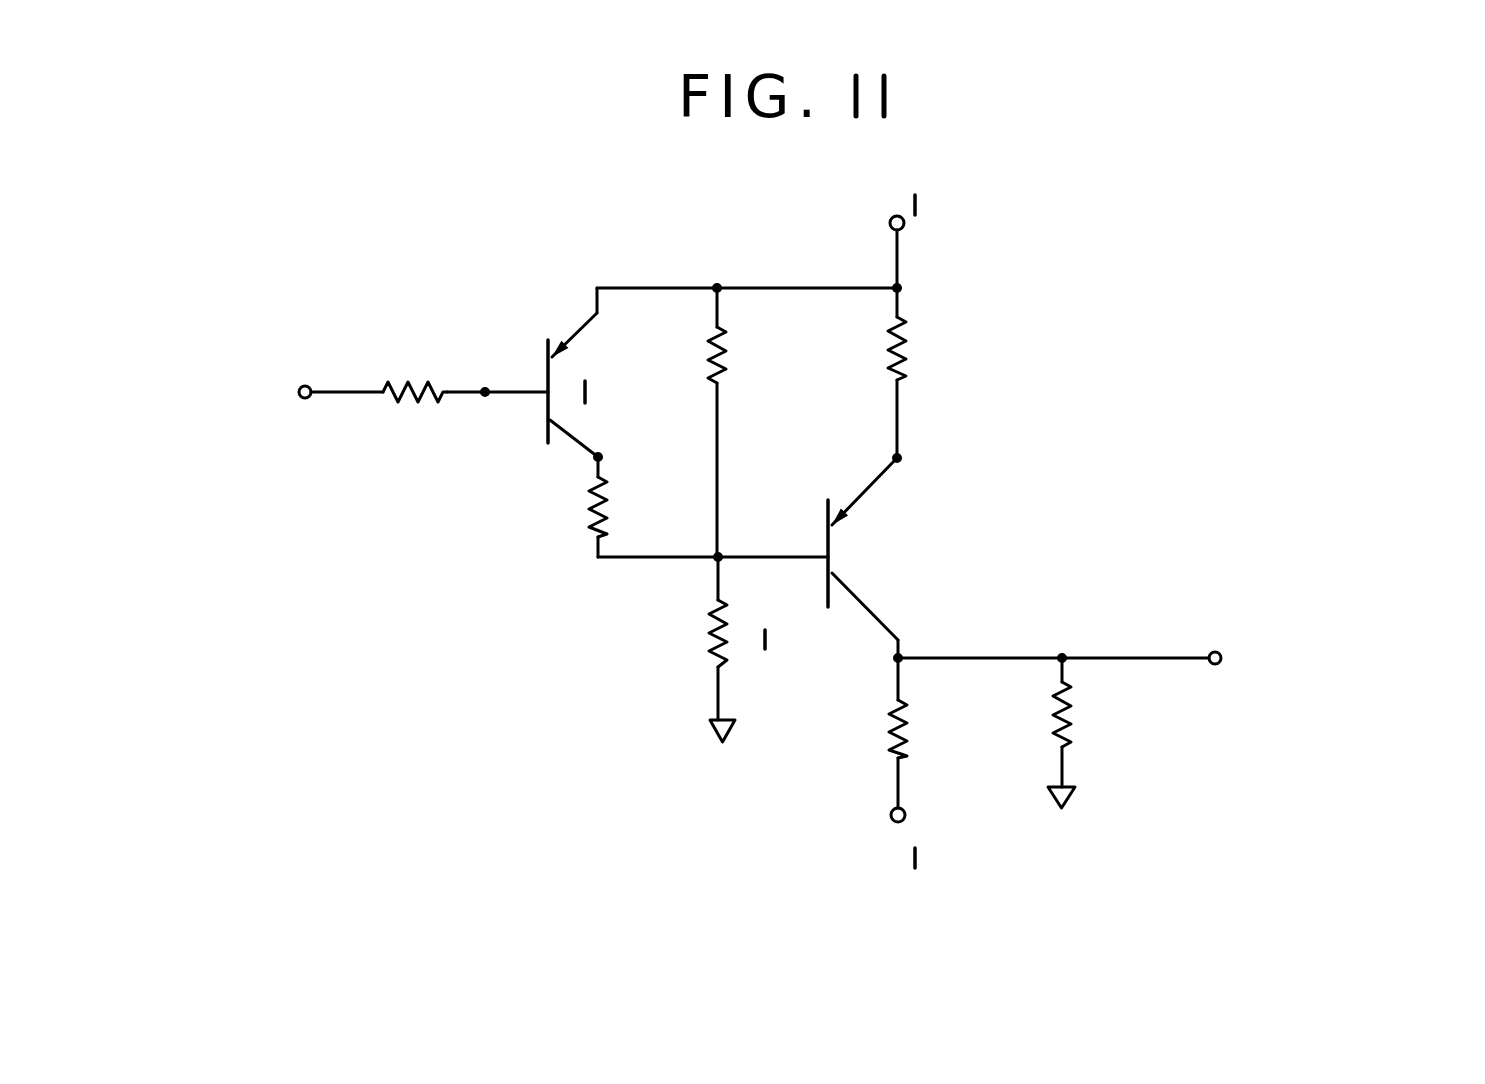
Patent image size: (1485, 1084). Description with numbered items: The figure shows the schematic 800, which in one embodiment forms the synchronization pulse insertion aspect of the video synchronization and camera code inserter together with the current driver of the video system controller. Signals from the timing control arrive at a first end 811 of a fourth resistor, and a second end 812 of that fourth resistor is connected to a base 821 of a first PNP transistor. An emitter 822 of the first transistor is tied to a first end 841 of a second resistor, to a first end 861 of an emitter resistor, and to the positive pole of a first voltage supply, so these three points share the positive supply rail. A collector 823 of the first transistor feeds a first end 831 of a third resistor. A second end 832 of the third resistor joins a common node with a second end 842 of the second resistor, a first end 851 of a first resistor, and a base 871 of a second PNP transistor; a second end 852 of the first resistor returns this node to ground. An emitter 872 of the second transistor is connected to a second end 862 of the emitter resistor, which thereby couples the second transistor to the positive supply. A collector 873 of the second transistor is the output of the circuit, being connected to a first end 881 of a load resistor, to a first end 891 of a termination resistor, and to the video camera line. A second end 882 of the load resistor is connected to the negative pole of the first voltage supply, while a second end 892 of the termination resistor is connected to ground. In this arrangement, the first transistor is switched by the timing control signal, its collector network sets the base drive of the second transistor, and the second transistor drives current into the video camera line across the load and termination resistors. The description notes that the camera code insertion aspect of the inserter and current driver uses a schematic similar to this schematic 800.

The schematic 800 is at (375, 670).
The first end of resistor R4 811 is at (305, 384).
The second end of resistor R4 812 is at (463, 385).
The base of transistor T1 821 is at (509, 396).
The emitter of transistor T1 822 is at (582, 333).
The collector of transistor T1 823 is at (577, 440).
The first end of resistor R3 831 is at (600, 462).
The second end of resistor R3 832 is at (597, 552).
The first end of resistor R2 841 is at (715, 300).
The second end of resistor R2 842 is at (720, 462).
The first end of resistor R1 851 is at (718, 577).
The second end of resistor R1 852 is at (718, 697).
The first end of resistor RE 861 is at (900, 303).
The second end of resistor RE 862 is at (900, 421).
The base of transistor T2 871 is at (764, 555).
The emitter of transistor T2 872 is at (872, 481).
The collector of transistor T2 873 is at (885, 621).
The first end of resistor RL 881 is at (896, 680).
The second end of resistor RL 882 is at (898, 787).
The first end of resistor RT 891 is at (1060, 677).
The second end of resistor RT 892 is at (1063, 765).